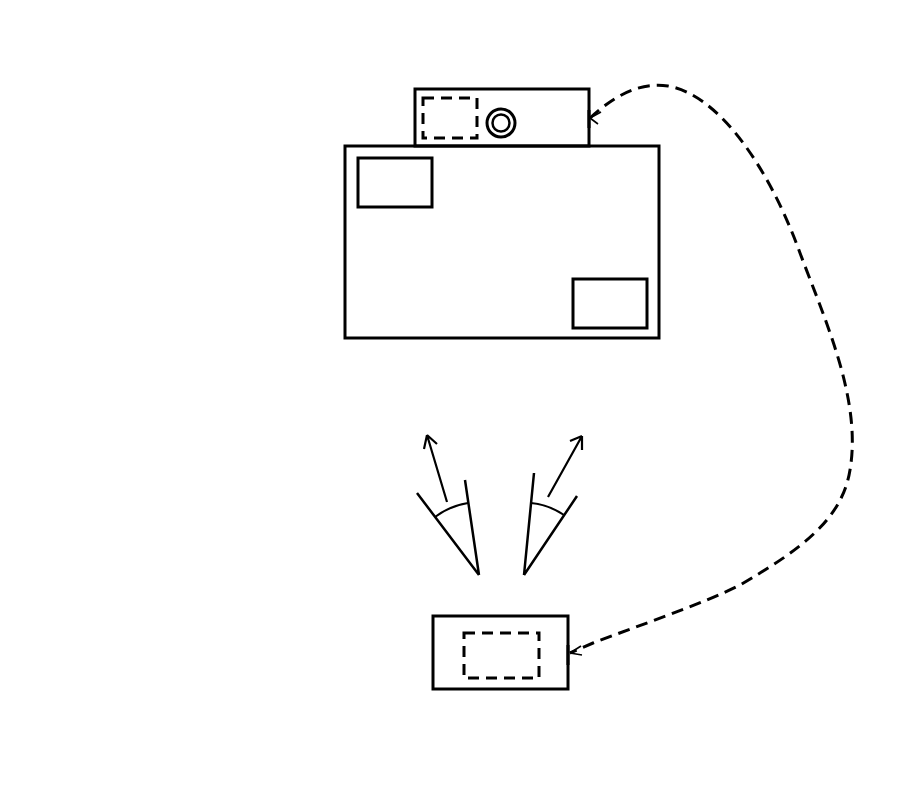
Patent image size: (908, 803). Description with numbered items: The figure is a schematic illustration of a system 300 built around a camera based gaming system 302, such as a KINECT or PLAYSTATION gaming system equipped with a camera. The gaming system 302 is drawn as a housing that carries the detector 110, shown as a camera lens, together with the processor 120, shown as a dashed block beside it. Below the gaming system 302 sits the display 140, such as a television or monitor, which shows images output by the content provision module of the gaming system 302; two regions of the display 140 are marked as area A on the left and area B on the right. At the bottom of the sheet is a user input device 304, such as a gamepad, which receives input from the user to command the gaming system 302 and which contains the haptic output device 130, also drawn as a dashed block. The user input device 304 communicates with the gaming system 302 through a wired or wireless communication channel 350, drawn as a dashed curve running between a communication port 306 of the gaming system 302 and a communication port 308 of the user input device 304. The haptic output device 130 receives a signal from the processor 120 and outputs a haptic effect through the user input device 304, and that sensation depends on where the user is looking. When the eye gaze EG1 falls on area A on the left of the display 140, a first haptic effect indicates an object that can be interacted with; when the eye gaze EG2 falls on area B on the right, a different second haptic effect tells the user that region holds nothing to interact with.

The system 300 is at (146, 131).
The camera based gaming system 302 is at (573, 65).
The detector 110 is at (503, 108).
The processor 120 is at (472, 131).
The display 140 is at (640, 190).
The communication port 306 is at (599, 126).
The user input device 304 is at (409, 665).
The haptic output device 130 is at (523, 667).
The communication port 308 is at (571, 657).
The communication channel 350 is at (802, 253).
The eye gaze EG1 is at (458, 550).
The eye gaze EG2 is at (552, 535).